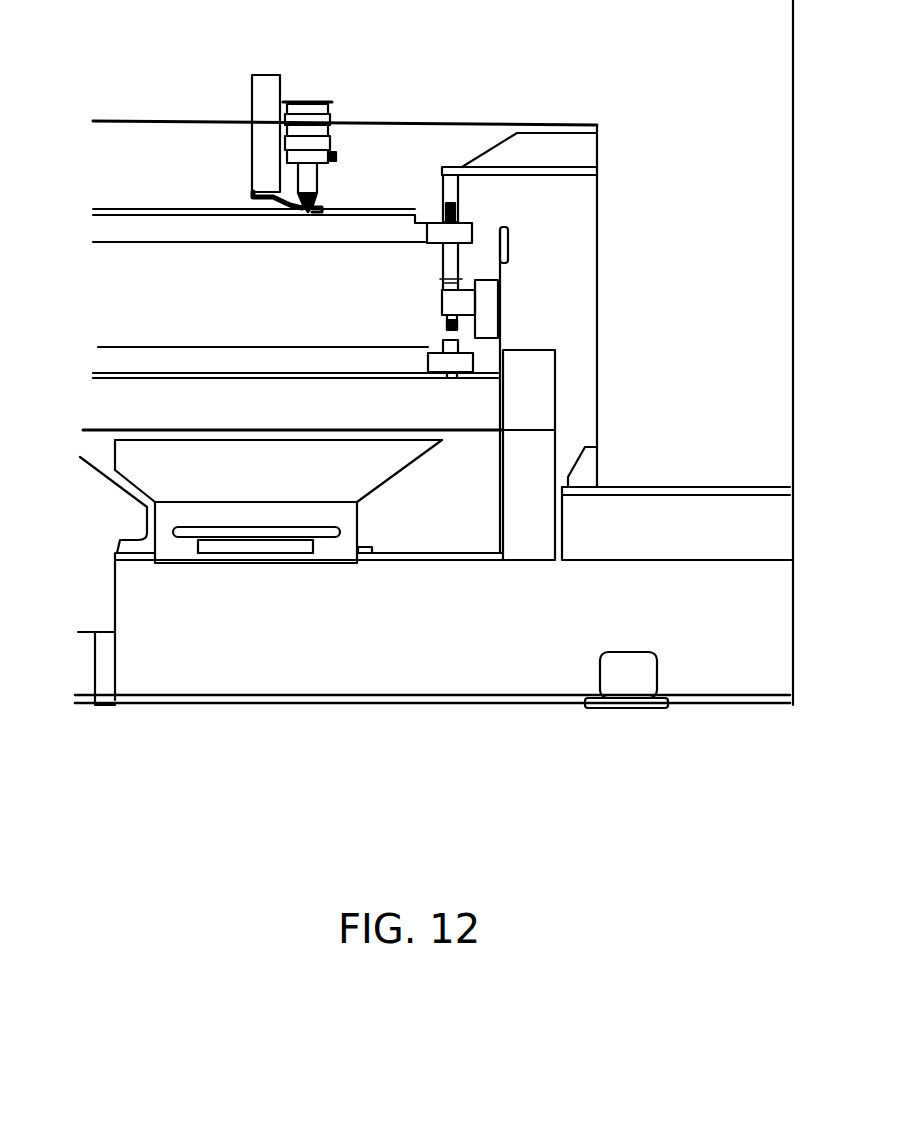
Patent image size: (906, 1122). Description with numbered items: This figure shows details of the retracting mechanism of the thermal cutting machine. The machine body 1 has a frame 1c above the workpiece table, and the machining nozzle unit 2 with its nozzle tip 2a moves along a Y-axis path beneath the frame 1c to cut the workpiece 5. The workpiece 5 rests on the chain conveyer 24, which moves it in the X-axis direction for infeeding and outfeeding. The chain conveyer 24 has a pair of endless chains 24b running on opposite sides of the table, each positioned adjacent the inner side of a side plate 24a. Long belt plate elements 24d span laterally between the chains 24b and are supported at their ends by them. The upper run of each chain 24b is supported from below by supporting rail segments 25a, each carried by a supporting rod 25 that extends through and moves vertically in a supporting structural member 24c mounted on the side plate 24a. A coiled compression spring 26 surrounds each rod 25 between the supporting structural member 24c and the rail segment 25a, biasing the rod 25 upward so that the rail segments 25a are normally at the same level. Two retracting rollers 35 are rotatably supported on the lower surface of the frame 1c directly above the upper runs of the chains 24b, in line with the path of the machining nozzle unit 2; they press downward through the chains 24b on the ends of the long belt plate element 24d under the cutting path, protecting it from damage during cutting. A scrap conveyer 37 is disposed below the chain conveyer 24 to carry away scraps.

The machine body 1 is at (420, 712).
The frame 1c is at (433, 113).
The machining nozzle unit 2 is at (297, 145).
The nozzle tip 2a is at (306, 211).
The workpiece 5 is at (148, 208).
The chain conveyer 24 is at (98, 313).
The side plate 24a is at (500, 328).
The endless chain 24b is at (443, 250).
The supporting structural member 24c is at (462, 300).
The long belt plate element 24d is at (175, 236).
The supporting rod 25 is at (443, 290).
The supporting rail segment 25a is at (443, 262).
The coiled compression spring 26 is at (457, 273).
The retracting roller 35 is at (460, 205).
The scrap conveyer 37 is at (345, 516).